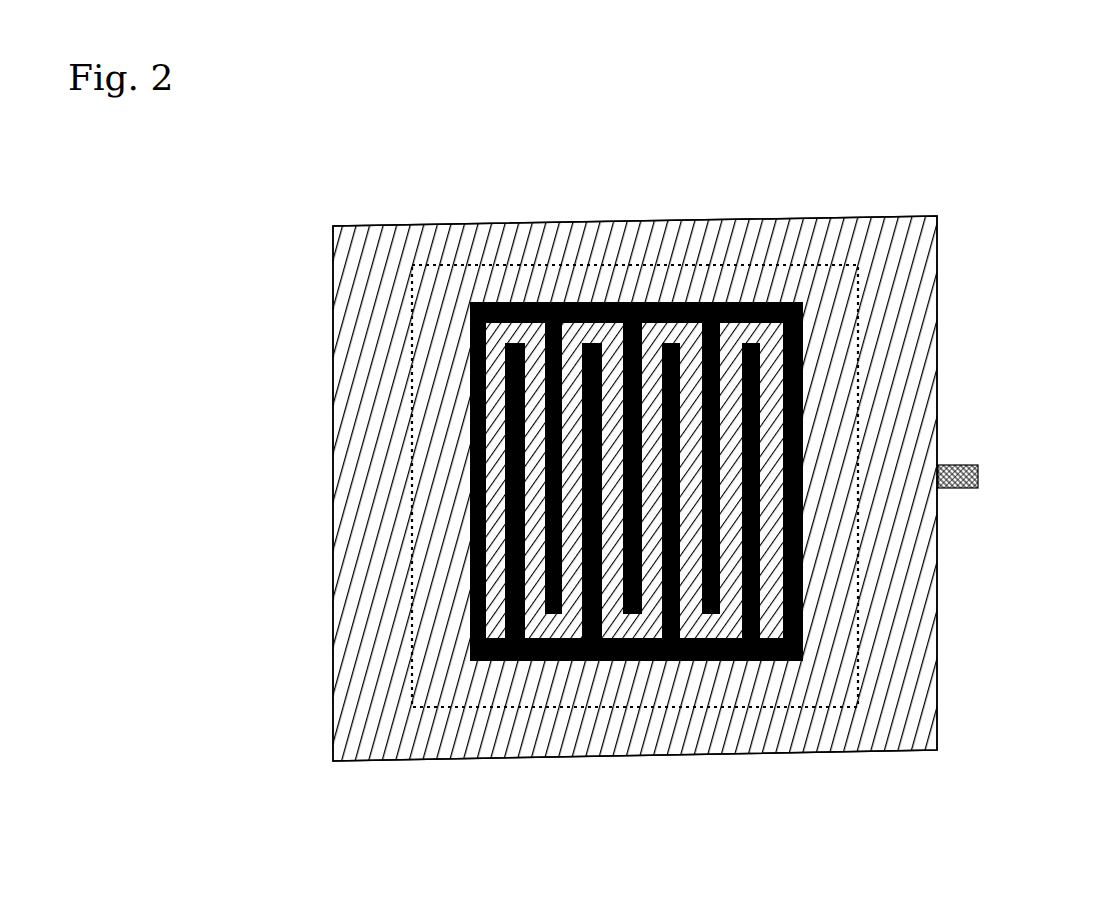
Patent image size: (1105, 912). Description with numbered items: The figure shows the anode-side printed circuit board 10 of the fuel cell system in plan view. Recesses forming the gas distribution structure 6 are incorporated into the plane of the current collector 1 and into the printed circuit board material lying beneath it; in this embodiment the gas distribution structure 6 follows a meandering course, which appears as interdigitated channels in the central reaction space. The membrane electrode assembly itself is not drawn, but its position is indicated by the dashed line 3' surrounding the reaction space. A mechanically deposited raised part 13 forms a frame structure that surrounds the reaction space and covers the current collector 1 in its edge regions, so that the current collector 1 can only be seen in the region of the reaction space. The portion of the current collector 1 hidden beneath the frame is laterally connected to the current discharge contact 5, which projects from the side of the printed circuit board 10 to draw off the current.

The current collector 1 is at (491, 298).
The dashed line 3' is at (635, 384).
The current discharge contact 5 is at (959, 468).
The gas distribution structure 6 is at (521, 662).
The anode-side printed circuit board 10 is at (897, 287).
The raised part 13 is at (355, 655).